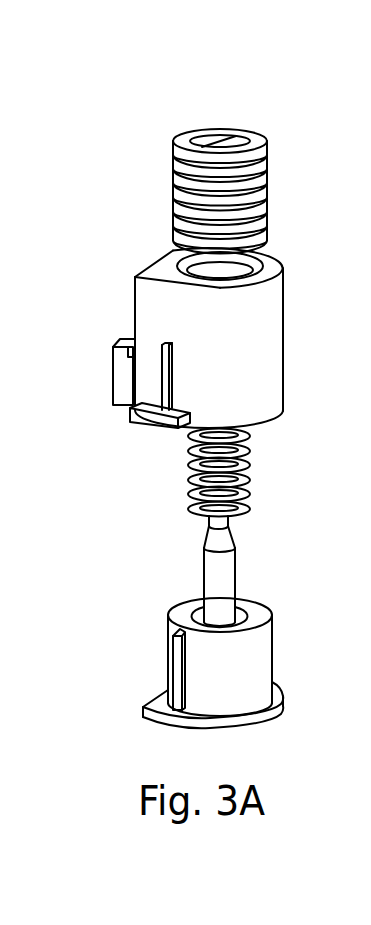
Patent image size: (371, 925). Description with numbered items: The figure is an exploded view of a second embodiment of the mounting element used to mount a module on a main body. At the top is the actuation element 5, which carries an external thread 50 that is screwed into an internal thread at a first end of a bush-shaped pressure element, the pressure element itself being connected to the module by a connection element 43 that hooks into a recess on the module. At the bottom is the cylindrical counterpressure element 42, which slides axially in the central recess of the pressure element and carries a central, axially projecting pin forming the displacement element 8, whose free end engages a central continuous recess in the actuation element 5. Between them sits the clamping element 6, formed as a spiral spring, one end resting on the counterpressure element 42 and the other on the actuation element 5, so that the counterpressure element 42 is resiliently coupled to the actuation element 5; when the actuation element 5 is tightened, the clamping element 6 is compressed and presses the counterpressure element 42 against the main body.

The actuation element 5 is at (189, 116).
The external thread 50 is at (233, 191).
The connection element 43 is at (127, 367).
The clamping element 6 is at (250, 455).
The displacement element 8 is at (218, 583).
The counterpressure element 42 is at (243, 663).